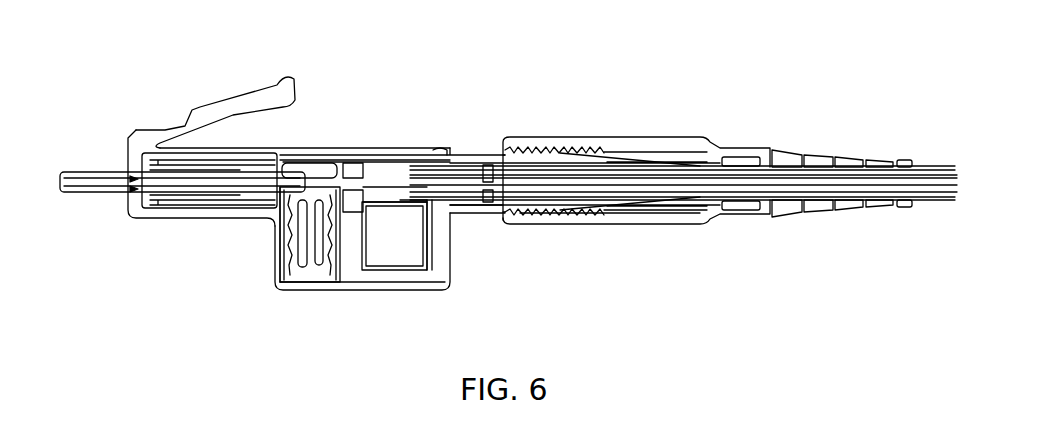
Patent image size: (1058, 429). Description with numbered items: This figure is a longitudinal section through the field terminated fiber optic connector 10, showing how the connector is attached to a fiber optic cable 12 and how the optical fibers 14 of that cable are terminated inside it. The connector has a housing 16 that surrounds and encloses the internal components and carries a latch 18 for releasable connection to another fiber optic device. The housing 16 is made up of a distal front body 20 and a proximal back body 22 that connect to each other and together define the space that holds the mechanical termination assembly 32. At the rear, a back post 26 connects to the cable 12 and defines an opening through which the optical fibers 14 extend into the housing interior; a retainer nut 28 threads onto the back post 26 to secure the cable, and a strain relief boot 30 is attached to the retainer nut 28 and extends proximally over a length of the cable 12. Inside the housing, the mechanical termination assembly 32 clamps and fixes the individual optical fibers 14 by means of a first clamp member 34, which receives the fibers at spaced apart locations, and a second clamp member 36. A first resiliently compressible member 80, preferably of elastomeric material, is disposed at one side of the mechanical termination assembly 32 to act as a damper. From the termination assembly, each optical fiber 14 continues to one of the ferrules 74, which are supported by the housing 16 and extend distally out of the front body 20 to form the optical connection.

The field terminated fiber optic connector 10 is at (381, 78).
The fiber optic cable 12 is at (928, 168).
The optical fibers 14 is at (510, 178).
The housing 16 is at (349, 126).
The latch 18 is at (233, 103).
The front body 20 is at (177, 210).
The back body 22 is at (443, 257).
The back post 26 is at (578, 212).
The retainer nut 28 is at (680, 138).
The strain relief boot 30 is at (738, 142).
The mechanical termination assembly 32 is at (270, 279).
The first clamp member 34 is at (308, 170).
The second clamp member 36 is at (313, 280).
The ferrules 74 is at (72, 152).
The first resiliently compressible member 80 is at (355, 192).